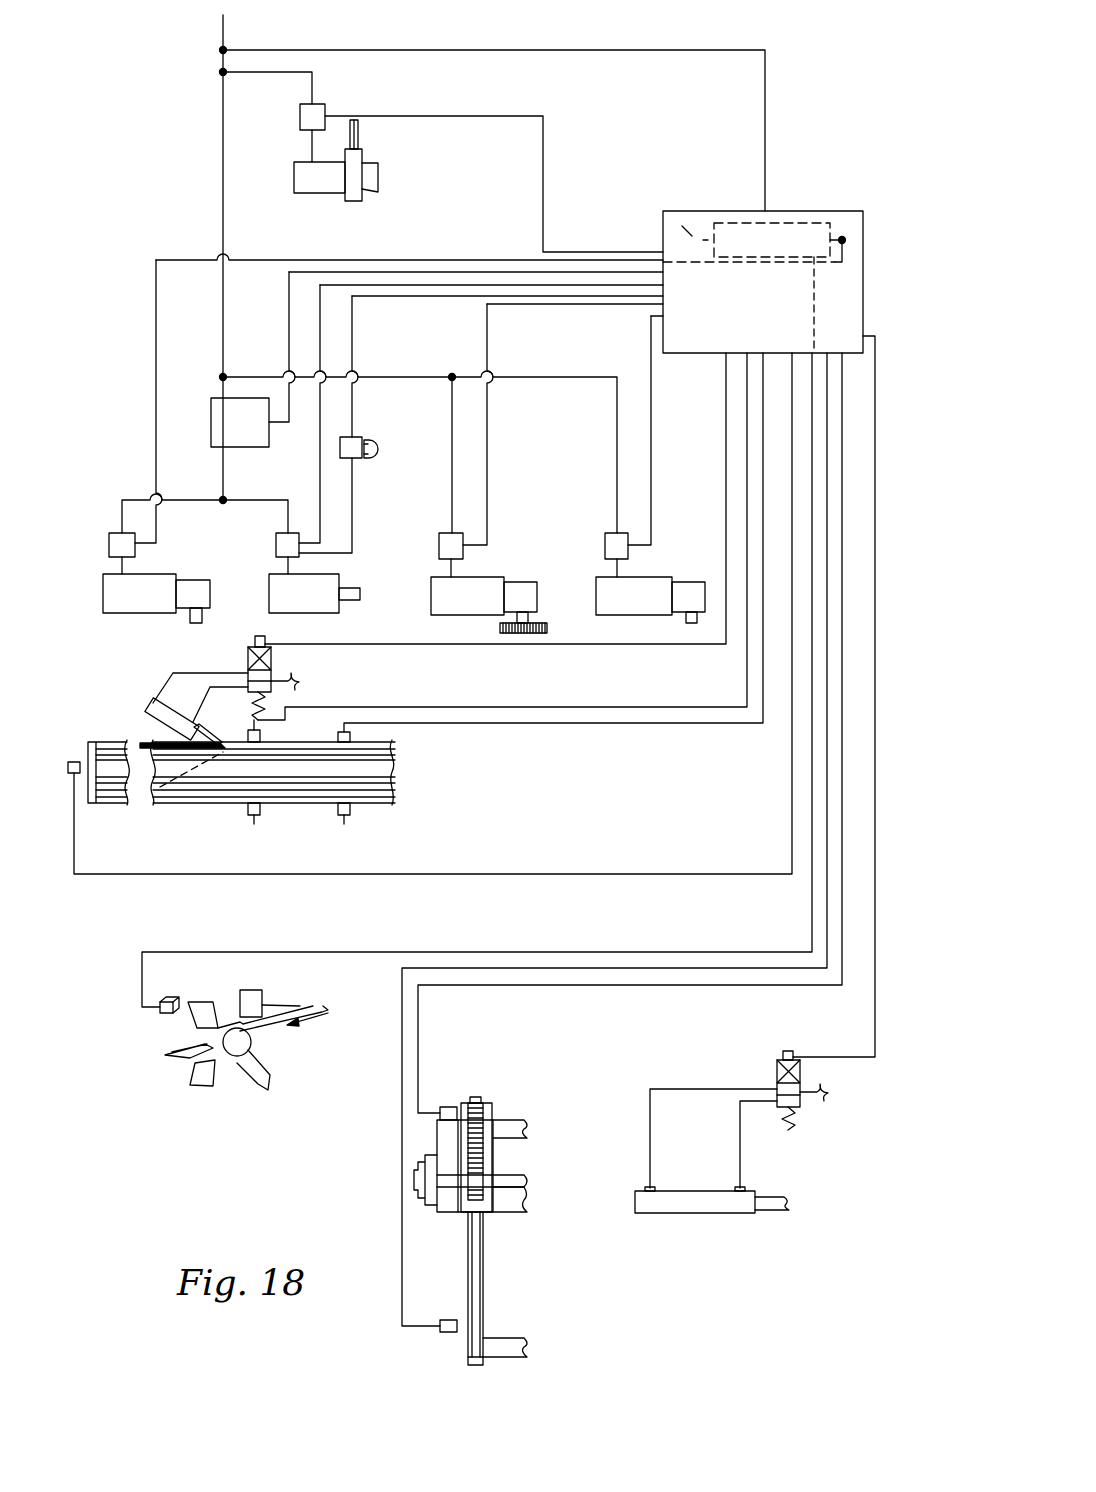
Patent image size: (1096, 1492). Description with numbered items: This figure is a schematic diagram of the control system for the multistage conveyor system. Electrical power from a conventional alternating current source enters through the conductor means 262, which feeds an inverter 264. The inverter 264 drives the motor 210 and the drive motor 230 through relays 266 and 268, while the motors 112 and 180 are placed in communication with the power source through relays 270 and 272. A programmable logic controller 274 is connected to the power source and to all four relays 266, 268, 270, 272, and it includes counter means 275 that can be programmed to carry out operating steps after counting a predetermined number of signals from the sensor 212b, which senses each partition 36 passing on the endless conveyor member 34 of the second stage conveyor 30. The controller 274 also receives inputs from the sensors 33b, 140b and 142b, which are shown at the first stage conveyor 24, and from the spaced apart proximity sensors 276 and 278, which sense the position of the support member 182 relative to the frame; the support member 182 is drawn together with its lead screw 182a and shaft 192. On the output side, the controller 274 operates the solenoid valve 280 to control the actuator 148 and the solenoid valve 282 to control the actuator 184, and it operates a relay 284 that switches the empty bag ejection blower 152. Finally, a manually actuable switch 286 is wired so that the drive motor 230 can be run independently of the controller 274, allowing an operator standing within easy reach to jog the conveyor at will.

The conductor means 262 is at (223, 29).
The relay 284 is at (300, 118).
The empty bag ejection blower 152 is at (324, 198).
The counter means 275 is at (690, 200).
The programmable logic controller 274 is at (826, 211).
The inverter 264 is at (211, 422).
The manually actuable switch 286 is at (340, 450).
The relay 266 is at (109, 547).
The relay 268 is at (276, 547).
The relay 270 is at (439, 547).
The relay 272 is at (605, 547).
The motor 210 is at (142, 606).
The drive motor 230 is at (308, 606).
The motor 112 is at (470, 609).
The motor 180 is at (635, 609).
The solenoid valve 280 is at (271, 660).
The actuator 148 is at (146, 710).
The sensor 140b is at (352, 737).
The sensor 142b is at (238, 741).
The sensor 33b is at (74, 762).
The first stage conveyor 24 is at (206, 806).
The partition 36 is at (255, 990).
The sensor 212b is at (167, 1013).
The endless conveyor member 34 is at (275, 1020).
The second stage conveyor 30 is at (255, 1092).
The proximity sensor 276 is at (448, 1107).
The lead screw 182a is at (493, 1165).
The support member 182 is at (510, 1212).
The shaft 192 is at (484, 1288).
The proximity sensor 278 is at (448, 1332).
The solenoid valve 282 is at (777, 1073).
The actuator 184 is at (697, 1213).